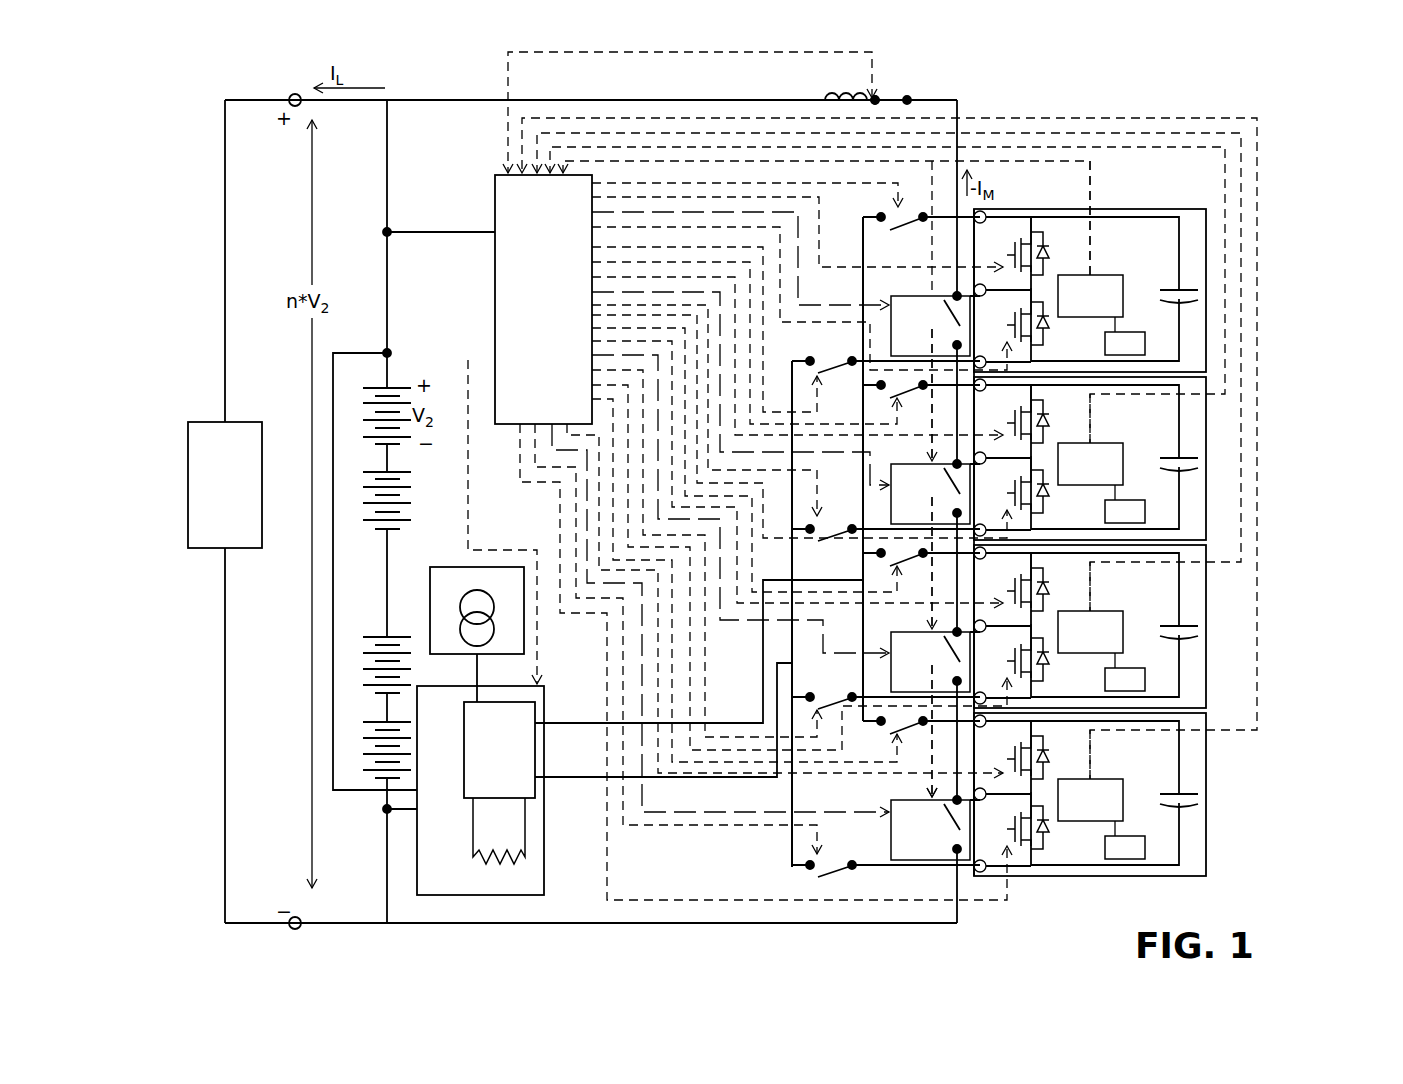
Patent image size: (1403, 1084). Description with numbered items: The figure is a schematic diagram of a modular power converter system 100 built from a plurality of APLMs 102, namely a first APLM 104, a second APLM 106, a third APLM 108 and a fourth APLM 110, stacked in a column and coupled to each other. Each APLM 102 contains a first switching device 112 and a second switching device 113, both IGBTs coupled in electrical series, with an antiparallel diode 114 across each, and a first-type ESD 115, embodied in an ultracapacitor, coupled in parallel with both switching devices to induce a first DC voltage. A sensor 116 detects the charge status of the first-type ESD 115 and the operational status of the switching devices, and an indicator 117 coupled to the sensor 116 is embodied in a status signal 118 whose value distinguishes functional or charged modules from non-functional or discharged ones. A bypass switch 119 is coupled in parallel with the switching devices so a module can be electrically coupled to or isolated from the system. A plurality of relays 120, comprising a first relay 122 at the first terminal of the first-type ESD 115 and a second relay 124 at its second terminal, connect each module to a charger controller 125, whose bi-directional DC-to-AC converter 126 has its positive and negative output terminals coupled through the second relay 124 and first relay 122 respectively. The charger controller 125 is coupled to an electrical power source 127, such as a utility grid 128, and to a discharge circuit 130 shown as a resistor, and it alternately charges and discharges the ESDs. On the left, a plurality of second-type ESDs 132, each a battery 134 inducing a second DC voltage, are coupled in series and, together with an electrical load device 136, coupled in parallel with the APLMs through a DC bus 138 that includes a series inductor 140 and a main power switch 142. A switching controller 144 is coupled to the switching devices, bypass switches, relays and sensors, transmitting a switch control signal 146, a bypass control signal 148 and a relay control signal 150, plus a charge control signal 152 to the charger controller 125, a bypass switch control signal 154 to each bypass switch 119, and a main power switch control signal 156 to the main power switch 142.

The modular power converter system 100 is at (1172, 85).
The APLMs 102 is at (1060, 896).
The first APLM 104 is at (1206, 756).
The second APLM 106 is at (1206, 588).
The third APLM 108 is at (1206, 420).
The fourth APLM 110 is at (1206, 252).
The first switching device 112 is at (1016, 303).
The second switching device 113 is at (1016, 233).
The antiparallel diode 114 is at (1050, 252).
The first-type ESD 115 is at (1163, 285).
The sensor 116 is at (1090, 548).
The indicator 117 is at (1125, 588).
The status signal 118 is at (1090, 186).
The bypass switch 119 is at (935, 576).
The plurality of relays 120 is at (838, 880).
The first relay 122 is at (826, 360).
The second relay 124 is at (909, 228).
The charger controller 125 is at (480, 790).
The bi-directional DC-to-AC converter 126 is at (499, 750).
The electrical power source 127 is at (477, 634).
The utility grid 128 is at (462, 603).
The discharge circuit 130 is at (473, 852).
The second-type ESD 132 is at (408, 356).
The battery 134 is at (405, 472).
The electrical load device 136 is at (225, 485).
The DC bus 138 is at (480, 102).
The inductor 140 is at (830, 92).
The main power switch 142 is at (882, 94).
The switching controller 144 is at (543, 299).
The switch control signal 146 is at (540, 485).
The bypass control signal 148 is at (738, 625).
The relay control signal 150 is at (672, 828).
The charge control signal 152 is at (465, 536).
The bypass switch control signal 154 is at (1012, 120).
The main power switch control signal 156 is at (635, 53).